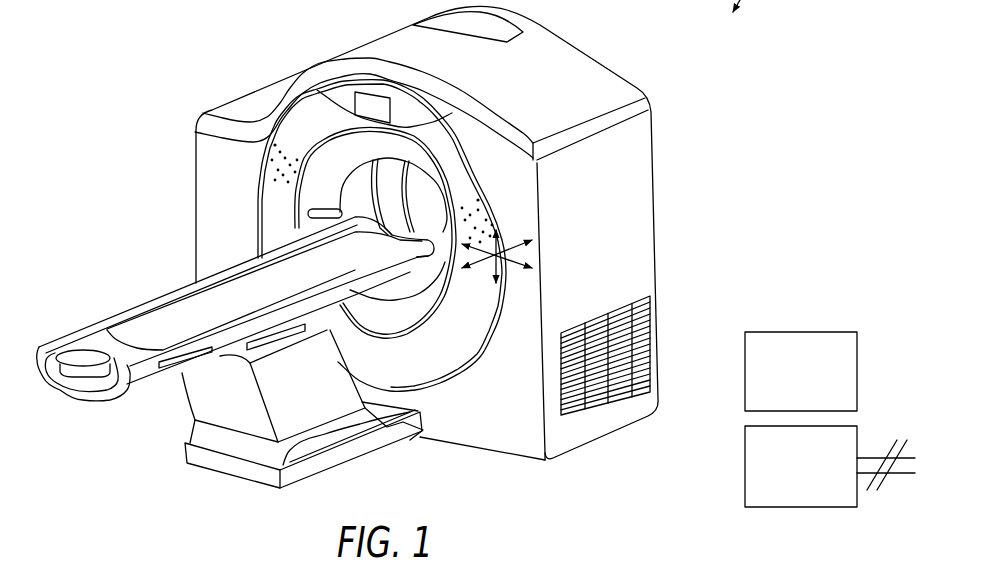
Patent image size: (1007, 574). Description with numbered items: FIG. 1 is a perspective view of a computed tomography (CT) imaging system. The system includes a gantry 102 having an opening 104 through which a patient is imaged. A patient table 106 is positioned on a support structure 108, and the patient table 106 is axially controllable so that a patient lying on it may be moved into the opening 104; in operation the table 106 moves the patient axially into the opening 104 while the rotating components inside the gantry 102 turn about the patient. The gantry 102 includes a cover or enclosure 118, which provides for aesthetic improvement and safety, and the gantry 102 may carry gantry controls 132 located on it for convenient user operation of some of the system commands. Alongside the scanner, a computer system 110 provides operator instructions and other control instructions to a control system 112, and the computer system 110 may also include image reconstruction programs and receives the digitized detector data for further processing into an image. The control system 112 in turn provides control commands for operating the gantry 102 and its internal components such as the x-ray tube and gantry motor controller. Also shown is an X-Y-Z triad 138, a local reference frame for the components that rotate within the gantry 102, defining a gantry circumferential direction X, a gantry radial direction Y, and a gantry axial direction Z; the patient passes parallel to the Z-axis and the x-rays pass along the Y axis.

The gantry 102 is at (318, 103).
The opening 104 is at (393, 204).
The patient table 106 is at (175, 291).
The support structure 108 is at (200, 404).
The computer system 110 is at (860, 347).
The control system 112 is at (860, 443).
The cover or enclosure 118 is at (640, 146).
The gantry controls 132 is at (418, 248).
The X-Y-Z triad 138 is at (560, 250).